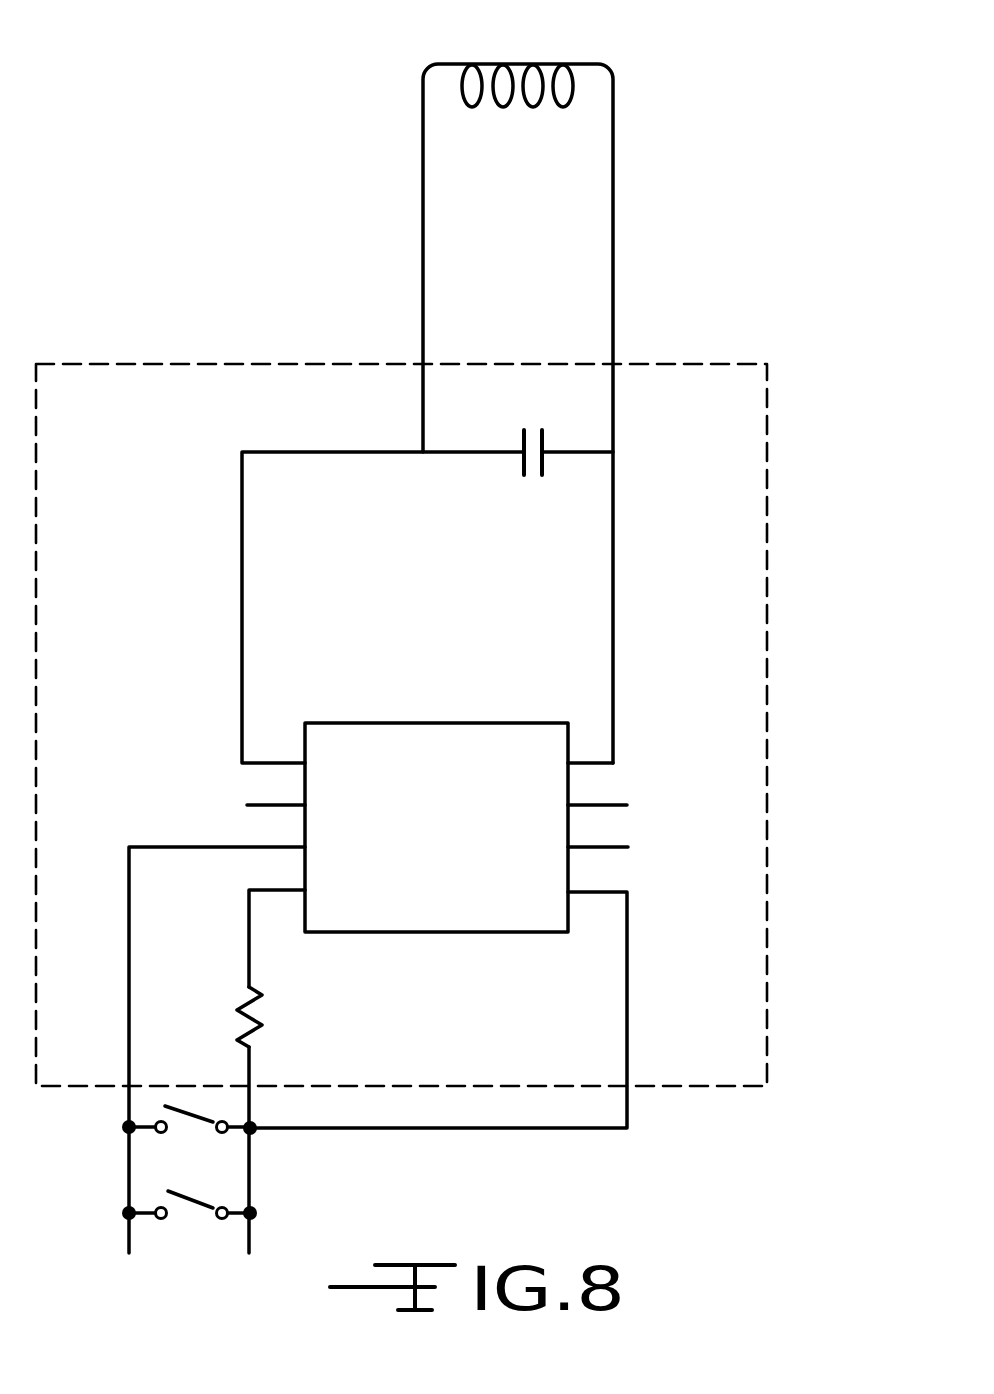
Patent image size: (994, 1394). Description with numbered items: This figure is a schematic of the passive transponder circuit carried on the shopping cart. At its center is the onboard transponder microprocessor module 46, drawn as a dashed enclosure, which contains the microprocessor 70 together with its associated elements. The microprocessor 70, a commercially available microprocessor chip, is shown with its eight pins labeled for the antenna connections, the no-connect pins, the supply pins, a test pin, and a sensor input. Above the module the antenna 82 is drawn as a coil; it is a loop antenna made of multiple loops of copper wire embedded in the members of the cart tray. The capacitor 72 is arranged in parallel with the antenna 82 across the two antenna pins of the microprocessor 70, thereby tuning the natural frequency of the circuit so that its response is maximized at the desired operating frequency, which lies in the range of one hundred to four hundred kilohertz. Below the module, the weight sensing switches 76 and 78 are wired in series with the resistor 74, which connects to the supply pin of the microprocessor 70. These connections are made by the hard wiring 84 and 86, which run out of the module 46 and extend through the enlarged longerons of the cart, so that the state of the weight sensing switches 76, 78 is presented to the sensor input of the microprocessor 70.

The onboard transponder microprocessor module 46 is at (768, 716).
The microprocessor 70 is at (445, 785).
The capacitor 72 is at (523, 430).
The resistor 74 is at (241, 1005).
The weight sensing switch 76 is at (192, 1100).
The weight sensing switch 78 is at (170, 1193).
The antenna 82 is at (548, 64).
The hard wiring 84 is at (444, 1125).
The hard wiring 86 is at (128, 1018).